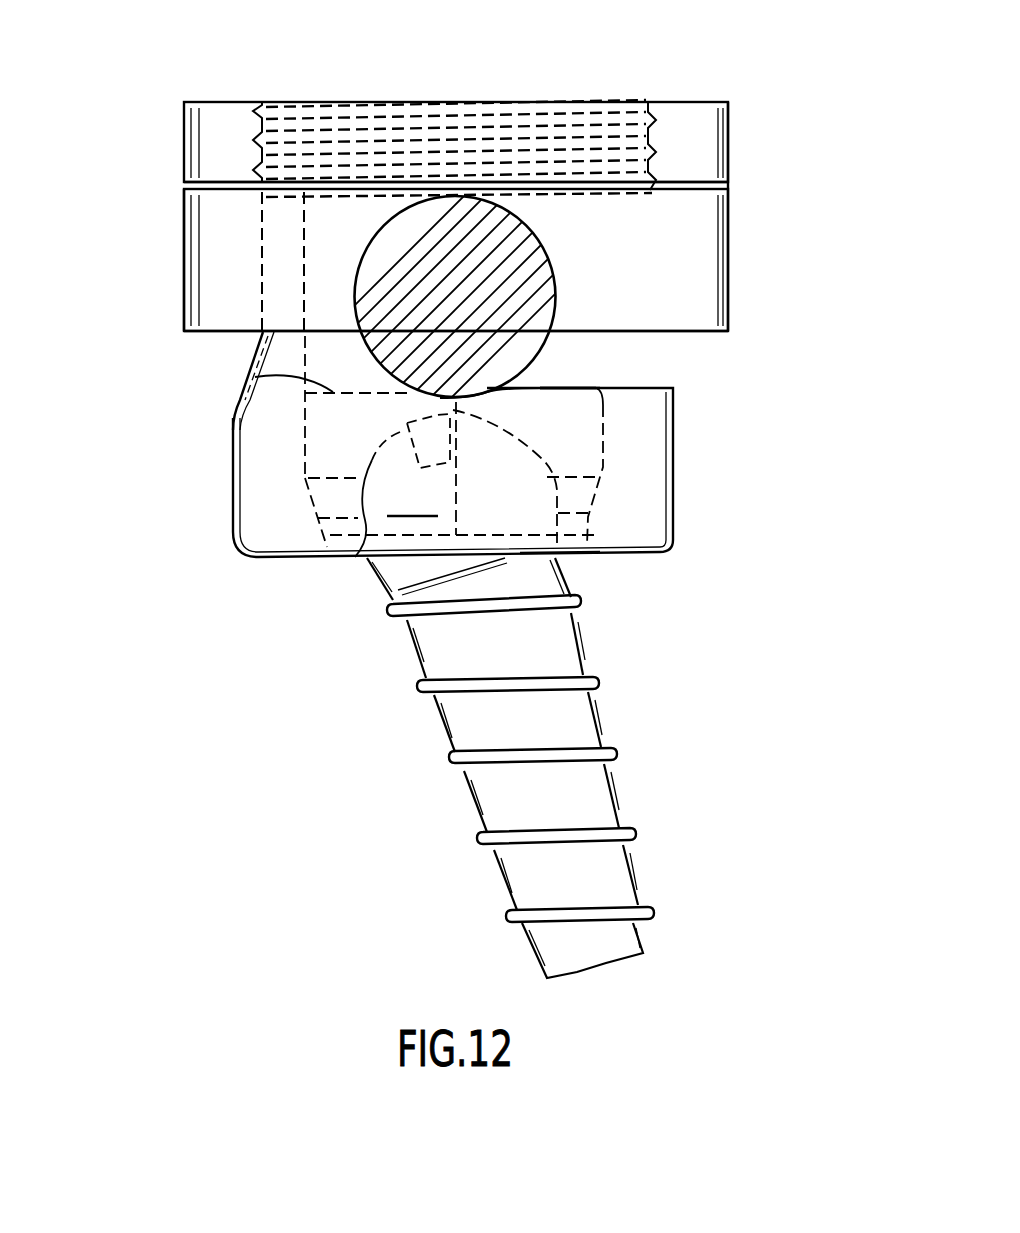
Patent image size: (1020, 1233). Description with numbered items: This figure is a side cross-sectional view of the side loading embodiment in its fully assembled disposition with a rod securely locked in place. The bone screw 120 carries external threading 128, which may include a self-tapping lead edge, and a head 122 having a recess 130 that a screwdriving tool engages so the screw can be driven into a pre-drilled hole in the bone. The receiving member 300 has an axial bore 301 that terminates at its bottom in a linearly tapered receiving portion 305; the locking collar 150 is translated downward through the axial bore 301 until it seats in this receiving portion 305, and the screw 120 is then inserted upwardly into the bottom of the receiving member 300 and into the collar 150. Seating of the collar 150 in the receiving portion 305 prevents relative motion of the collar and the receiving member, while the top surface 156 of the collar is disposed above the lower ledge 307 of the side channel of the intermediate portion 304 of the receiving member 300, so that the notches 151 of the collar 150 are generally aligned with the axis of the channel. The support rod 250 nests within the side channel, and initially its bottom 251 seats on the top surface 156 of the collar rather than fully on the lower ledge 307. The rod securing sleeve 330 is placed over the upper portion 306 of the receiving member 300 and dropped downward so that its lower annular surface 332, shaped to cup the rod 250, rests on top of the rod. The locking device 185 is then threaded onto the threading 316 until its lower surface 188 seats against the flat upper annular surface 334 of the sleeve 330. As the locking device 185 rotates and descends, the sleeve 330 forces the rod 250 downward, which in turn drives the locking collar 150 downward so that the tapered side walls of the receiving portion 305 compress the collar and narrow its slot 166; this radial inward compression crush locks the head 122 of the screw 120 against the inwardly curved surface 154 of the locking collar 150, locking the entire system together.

The screw 120 is at (465, 726).
The head 122 is at (413, 502).
The external threading 128 is at (500, 838).
The recess 130 is at (417, 436).
The locking collar 150 is at (577, 437).
The notches 151 is at (525, 412).
The inwardly curved surface 154 is at (366, 549).
The top surface 156 is at (270, 373).
The slot 166 is at (457, 457).
The locking device 185 is at (710, 115).
The lower surface 188 is at (700, 180).
The rod 250 is at (378, 342).
The bottom 251 is at (462, 397).
The receiving member 300 is at (204, 347).
The axial bore 301 is at (370, 128).
The intermediate portion 304 is at (673, 307).
The receiving portion 305 is at (569, 546).
The upper portion 306 is at (505, 100).
The lower ledge 307 is at (563, 385).
The threading 316 is at (648, 122).
The rod securing sleeve 330 is at (186, 247).
The lower annular surface 332 is at (556, 286).
The upper annular surface 334 is at (700, 187).